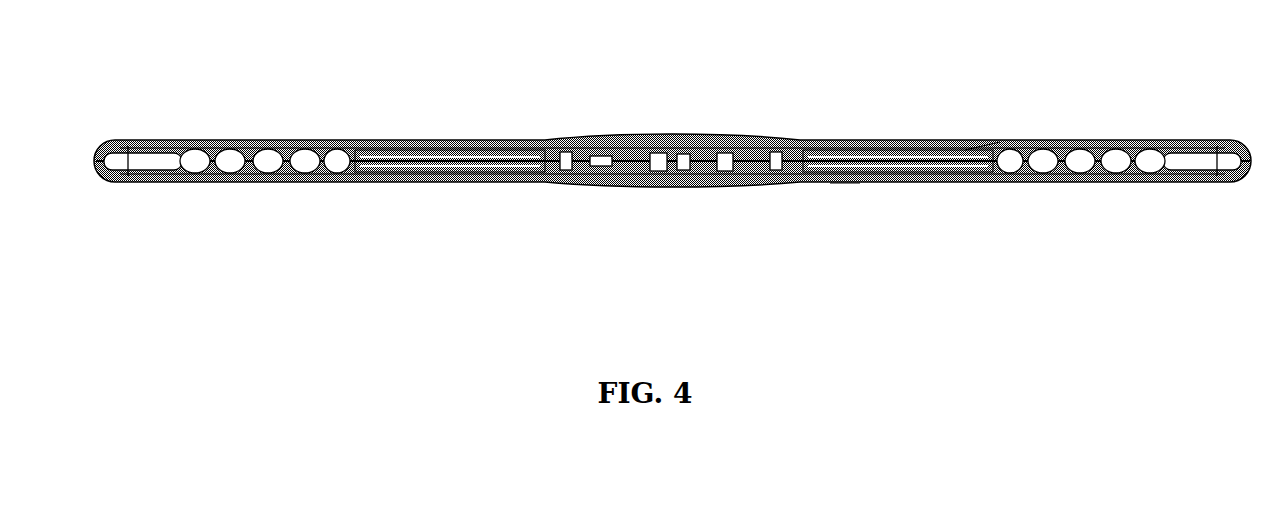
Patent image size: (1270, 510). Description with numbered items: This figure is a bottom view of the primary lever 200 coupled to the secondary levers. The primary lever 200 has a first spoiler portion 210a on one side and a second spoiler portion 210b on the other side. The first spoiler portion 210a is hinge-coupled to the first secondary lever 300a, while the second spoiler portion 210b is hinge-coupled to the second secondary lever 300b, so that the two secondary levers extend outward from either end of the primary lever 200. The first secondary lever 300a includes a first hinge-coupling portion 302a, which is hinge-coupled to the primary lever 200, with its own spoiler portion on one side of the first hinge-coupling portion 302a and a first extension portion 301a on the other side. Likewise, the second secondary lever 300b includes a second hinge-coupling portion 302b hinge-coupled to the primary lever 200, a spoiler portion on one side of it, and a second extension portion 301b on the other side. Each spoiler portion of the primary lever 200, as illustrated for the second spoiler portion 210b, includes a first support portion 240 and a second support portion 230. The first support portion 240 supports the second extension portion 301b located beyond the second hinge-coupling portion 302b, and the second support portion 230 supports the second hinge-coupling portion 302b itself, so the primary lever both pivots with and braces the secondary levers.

The primary lever 200 is at (993, 127).
The first spoiler portion 210a is at (545, 127).
The second spoiler portion 210b is at (803, 127).
The second support portion 230 is at (980, 150).
The first support portion 240 is at (842, 186).
The first secondary lever 300a is at (498, 188).
The second secondary lever 300b is at (847, 188).
The first extension portion 301a is at (432, 188).
The second extension portion 301b is at (915, 188).
The first hinge-coupling portion 302a is at (353, 188).
The second hinge-coupling portion 302b is at (995, 188).